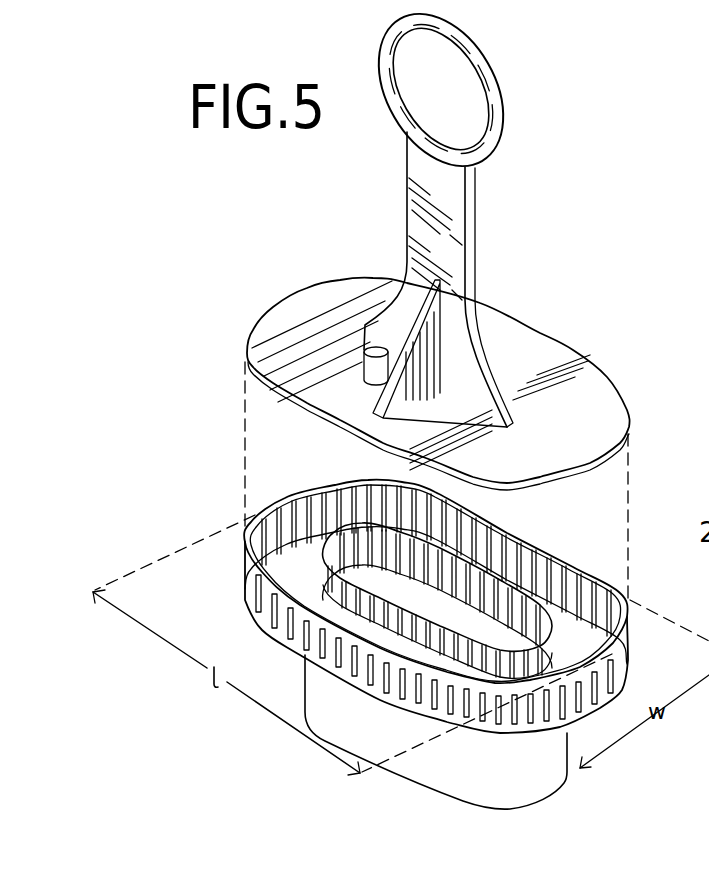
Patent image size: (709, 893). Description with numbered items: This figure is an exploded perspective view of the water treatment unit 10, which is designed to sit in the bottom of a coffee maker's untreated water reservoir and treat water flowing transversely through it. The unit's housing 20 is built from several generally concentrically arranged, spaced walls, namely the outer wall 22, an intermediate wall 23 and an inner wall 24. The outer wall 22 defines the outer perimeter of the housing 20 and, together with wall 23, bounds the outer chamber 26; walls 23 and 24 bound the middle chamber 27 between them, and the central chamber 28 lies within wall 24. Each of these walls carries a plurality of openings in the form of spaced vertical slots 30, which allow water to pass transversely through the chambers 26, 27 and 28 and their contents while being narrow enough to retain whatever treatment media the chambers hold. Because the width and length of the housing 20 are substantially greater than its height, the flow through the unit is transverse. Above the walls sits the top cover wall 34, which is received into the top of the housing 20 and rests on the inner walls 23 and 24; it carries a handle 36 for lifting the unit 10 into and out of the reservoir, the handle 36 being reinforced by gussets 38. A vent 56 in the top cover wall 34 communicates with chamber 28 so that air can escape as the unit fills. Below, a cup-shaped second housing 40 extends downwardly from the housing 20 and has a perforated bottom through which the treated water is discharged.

The water treatment unit 10 is at (442, 626).
The housing 20 is at (442, 612).
The outer wall 22 is at (525, 533).
The wall 23 is at (483, 532).
The wall 24 is at (331, 535).
The chamber 26 is at (606, 623).
The chamber 27 is at (553, 637).
The chamber 28 is at (468, 628).
The vertical slots 30 is at (327, 600).
The top cover wall 34 is at (540, 353).
The handle 36 is at (462, 238).
The gussets 38 is at (375, 403).
The second housing 40 is at (370, 732).
The vent 56 is at (363, 362).